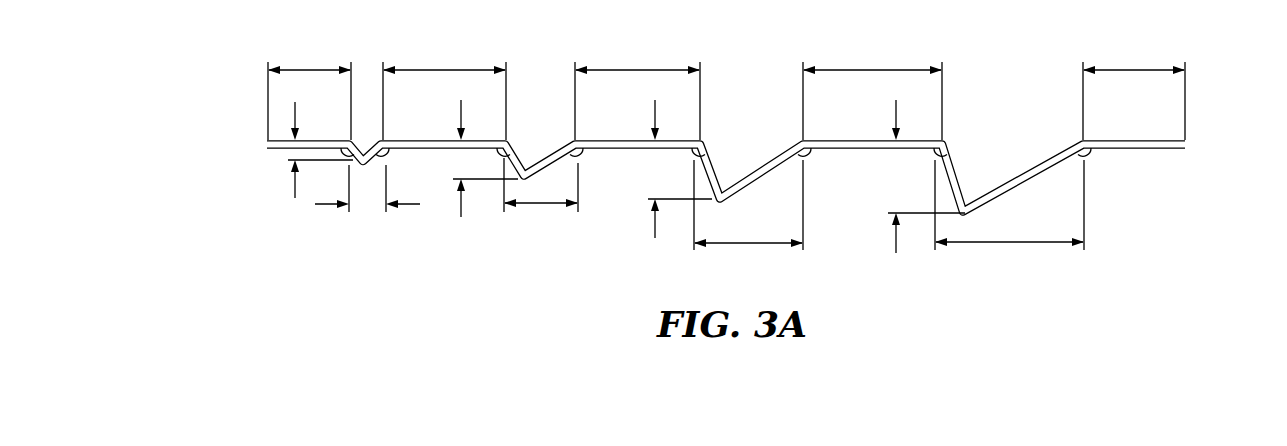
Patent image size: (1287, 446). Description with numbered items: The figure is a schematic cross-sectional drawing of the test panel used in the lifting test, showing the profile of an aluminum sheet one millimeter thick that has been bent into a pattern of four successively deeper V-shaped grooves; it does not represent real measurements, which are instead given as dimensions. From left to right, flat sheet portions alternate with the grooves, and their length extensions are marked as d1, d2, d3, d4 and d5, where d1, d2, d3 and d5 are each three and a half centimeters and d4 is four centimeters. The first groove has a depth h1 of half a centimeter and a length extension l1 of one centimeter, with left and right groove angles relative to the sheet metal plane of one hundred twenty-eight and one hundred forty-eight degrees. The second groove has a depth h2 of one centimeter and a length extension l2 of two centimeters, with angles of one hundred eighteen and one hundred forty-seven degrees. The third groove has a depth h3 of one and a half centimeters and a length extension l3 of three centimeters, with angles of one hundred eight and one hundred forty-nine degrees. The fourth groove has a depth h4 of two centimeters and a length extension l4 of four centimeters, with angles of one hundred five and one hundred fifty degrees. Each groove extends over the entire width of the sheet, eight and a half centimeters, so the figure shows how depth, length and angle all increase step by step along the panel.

The length extension d1 is at (313, 68).
The length extension d2 is at (444, 68).
The length extension d3 is at (639, 68).
The length extension d4 is at (869, 68).
The length extension d5 is at (1130, 68).
The depth h1 is at (292, 108).
The depth h2 is at (458, 108).
The depth h3 is at (652, 107).
The depth h4 is at (893, 108).
The length extension l1 is at (318, 205).
The length extension l2 is at (540, 205).
The length extension l3 is at (747, 245).
The length extension l4 is at (1012, 244).